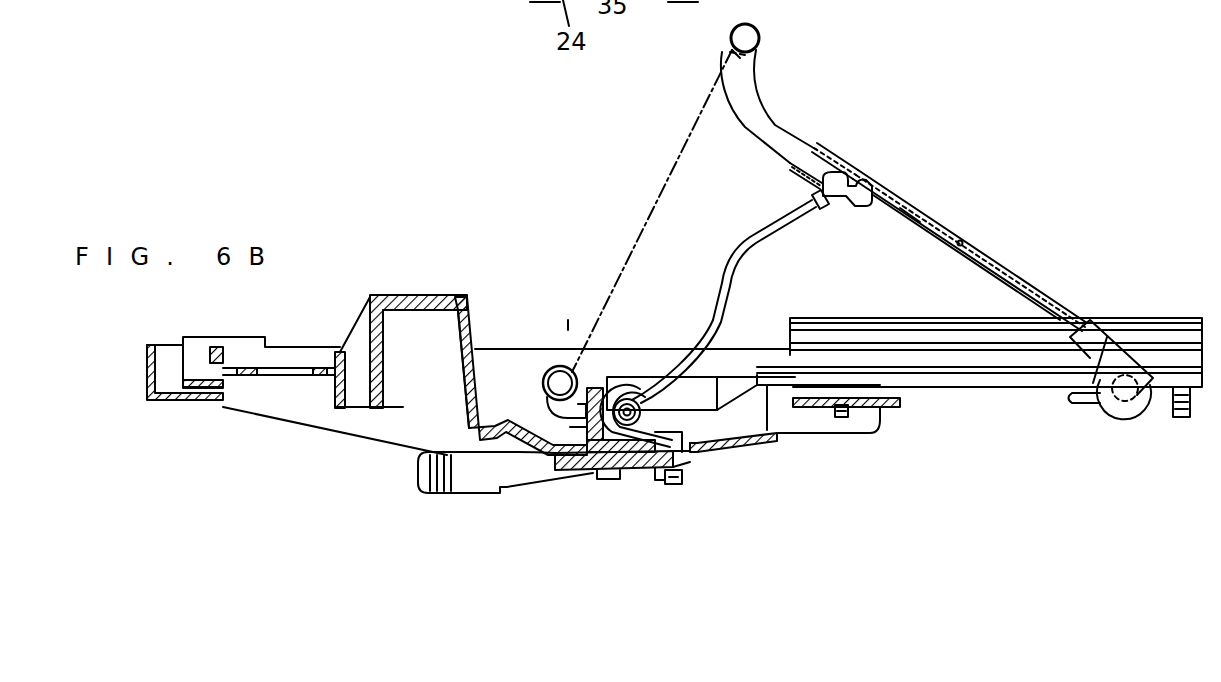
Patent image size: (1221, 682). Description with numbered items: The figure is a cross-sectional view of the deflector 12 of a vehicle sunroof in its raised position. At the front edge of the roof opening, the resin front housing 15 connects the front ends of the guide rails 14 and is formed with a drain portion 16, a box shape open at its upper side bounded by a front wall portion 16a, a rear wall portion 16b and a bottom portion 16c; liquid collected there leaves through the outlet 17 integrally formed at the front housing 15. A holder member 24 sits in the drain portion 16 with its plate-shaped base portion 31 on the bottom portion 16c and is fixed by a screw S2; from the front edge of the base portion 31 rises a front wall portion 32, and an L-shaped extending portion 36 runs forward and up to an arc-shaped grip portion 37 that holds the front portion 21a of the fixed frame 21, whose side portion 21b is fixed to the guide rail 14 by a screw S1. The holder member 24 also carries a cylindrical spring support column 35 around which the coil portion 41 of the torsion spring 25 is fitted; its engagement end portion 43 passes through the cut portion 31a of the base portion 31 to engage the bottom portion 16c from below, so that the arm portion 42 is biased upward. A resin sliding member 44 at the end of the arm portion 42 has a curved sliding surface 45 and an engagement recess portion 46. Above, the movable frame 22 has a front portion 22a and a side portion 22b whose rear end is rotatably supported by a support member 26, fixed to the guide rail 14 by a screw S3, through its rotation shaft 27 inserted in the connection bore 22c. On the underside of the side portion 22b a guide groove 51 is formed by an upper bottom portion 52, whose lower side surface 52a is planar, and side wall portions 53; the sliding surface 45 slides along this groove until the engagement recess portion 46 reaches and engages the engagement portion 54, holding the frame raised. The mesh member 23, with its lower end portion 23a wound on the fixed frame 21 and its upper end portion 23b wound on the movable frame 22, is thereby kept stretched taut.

The deflector 12 is at (968, 124).
The guide rail 14 is at (1162, 318).
The front housing 15 is at (417, 295).
The drain portion 16 is at (727, 438).
The front wall portion 16a is at (470, 368).
The rear wall portion 16b is at (772, 433).
The bottom portion 16c is at (640, 466).
The outlet 17 is at (427, 477).
The fixed frame 21 is at (740, 405).
The front portion 21a is at (557, 363).
The side portion 21b is at (712, 378).
The movable frame 22 is at (778, 37).
The front portion 22a is at (731, 40).
The side portion 22b is at (795, 135).
The connection bore 22c is at (1118, 407).
The mesh member 23 is at (660, 183).
The lower end portion 23a is at (562, 365).
The upper end portion 23b is at (720, 55).
The holder member 24 is at (597, 388).
The torsion spring 25 is at (724, 264).
The support member 26 is at (1088, 406).
The rotation shaft 27 is at (1135, 405).
The base portion 31 is at (596, 471).
The cut portion 31a is at (612, 478).
The front wall portion 32 is at (578, 426).
The spring support column 35 is at (630, 400).
The extending portion 36 is at (565, 396).
The grip portion 37 is at (544, 372).
The coil portion 41 is at (642, 405).
The arm portion 42 is at (760, 248).
The engagement end portion 43 is at (667, 432).
The sliding member 44 is at (867, 206).
The sliding surface 45 is at (840, 165).
The engagement recess portion 46 is at (828, 207).
The guide groove 51 is at (965, 243).
The upper bottom portion 52 is at (1024, 279).
The lower side surface 52a is at (927, 228).
The side wall portion 53 is at (982, 265).
The engagement portion 54 is at (812, 184).
The screw S1 is at (843, 418).
The screw S2 is at (676, 482).
The screw S3 is at (1180, 418).